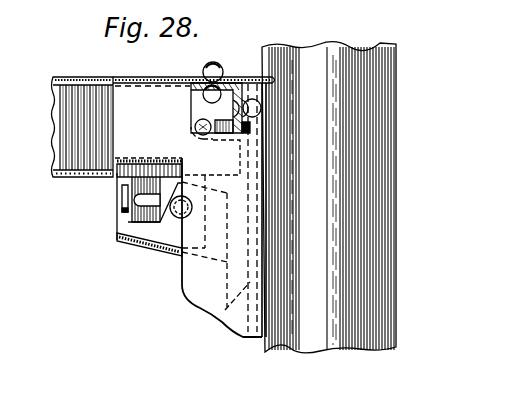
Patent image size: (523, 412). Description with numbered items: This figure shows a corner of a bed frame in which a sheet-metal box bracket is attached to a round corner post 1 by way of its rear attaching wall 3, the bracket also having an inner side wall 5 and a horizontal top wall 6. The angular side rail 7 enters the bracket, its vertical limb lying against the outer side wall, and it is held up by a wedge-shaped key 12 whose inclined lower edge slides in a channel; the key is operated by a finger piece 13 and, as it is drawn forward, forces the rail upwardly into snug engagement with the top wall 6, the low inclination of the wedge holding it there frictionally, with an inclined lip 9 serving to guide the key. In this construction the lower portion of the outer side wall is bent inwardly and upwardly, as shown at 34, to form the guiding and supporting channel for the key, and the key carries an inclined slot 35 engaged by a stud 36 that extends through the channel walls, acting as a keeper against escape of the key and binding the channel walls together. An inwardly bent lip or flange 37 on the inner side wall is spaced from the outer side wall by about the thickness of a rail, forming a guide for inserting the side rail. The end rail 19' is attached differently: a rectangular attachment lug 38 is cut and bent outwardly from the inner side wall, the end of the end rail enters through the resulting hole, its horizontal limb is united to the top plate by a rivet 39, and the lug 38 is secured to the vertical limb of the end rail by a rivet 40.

The corner post 1 is at (341, 218).
The rear attaching wall 3 is at (218, 318).
The inner side wall 5 is at (203, 280).
The horizontal top wall 6 is at (158, 77).
The side rail 7 is at (67, 130).
The inclined lip 9 is at (120, 194).
The wedge-shaped key 12 is at (128, 236).
The finger piece 13 is at (125, 212).
The end rail 19' is at (226, 100).
The inwardly and upwardly bent lower portion 34 is at (166, 215).
The inclined slot 35 is at (149, 162).
The stud 36 is at (176, 220).
The inwardly bent lip or flange 37 is at (126, 158).
The attachment lug 38 is at (245, 127).
The rivet 39 is at (212, 64).
The rivet 40 is at (252, 104).